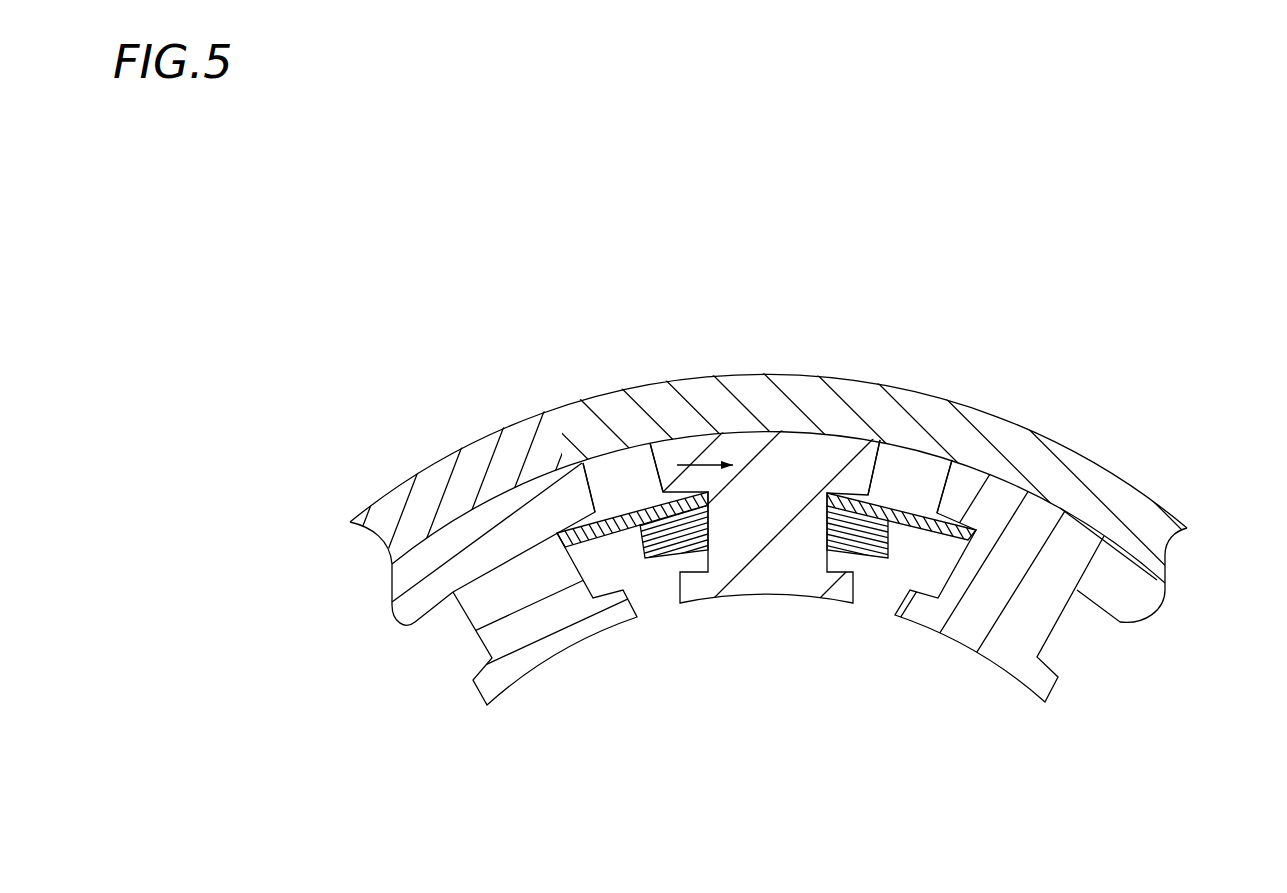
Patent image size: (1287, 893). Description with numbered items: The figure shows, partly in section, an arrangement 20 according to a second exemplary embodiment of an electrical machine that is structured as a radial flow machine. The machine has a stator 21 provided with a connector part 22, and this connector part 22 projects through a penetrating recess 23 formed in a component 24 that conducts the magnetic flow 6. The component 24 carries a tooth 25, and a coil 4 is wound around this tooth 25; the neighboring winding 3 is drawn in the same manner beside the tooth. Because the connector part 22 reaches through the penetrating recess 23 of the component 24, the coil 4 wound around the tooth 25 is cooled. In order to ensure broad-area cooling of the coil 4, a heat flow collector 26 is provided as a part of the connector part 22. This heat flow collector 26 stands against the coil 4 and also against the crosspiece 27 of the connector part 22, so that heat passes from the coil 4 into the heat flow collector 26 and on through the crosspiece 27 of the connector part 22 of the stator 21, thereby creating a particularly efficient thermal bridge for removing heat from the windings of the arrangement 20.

The arrangement 20 is at (853, 243).
The stator 21 is at (1168, 610).
The connector part 22 is at (1078, 505).
The penetrating recess 23 is at (582, 485).
The component 24 is at (418, 608).
The tooth 25 is at (787, 540).
The heat flow collector 26 is at (610, 510).
The crosspiece 27 is at (627, 467).
The coil 3 is at (879, 562).
The coil 4 is at (663, 560).
The magnetic flow 6 is at (718, 455).